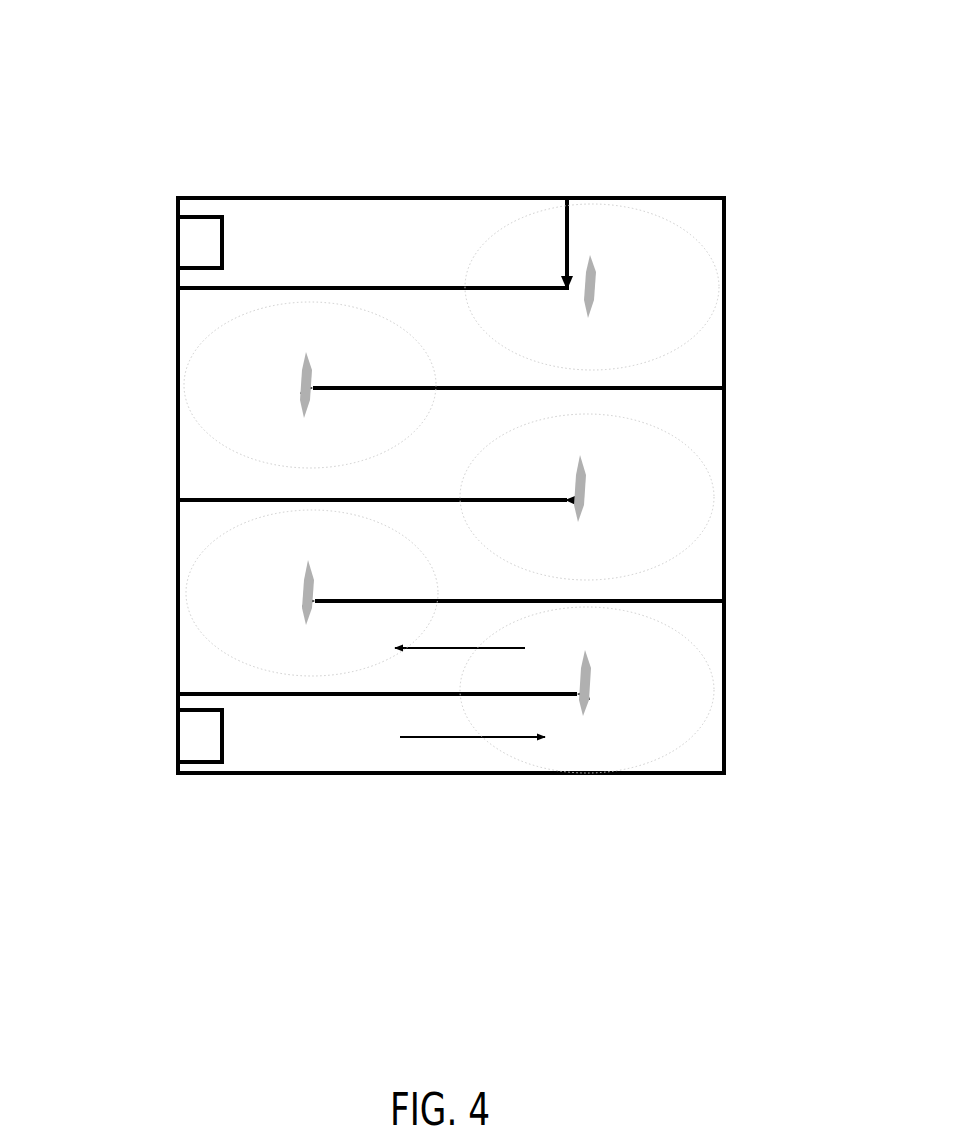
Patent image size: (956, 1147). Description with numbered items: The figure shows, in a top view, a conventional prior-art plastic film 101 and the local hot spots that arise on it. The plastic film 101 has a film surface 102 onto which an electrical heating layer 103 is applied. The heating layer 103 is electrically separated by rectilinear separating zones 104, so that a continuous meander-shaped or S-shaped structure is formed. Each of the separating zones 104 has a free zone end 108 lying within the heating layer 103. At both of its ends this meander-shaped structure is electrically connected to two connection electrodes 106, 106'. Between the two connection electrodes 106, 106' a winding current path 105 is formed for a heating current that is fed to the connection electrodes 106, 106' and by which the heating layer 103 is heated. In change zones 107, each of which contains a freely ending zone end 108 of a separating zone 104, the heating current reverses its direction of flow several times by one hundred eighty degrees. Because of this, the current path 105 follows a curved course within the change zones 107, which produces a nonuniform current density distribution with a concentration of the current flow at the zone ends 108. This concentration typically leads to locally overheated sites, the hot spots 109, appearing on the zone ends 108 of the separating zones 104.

The plastic film 101 is at (178, 118).
The film surface 102 is at (178, 236).
The electrical heating layer 103 is at (328, 261).
The separating zones 104 is at (378, 287).
The current path 105 is at (483, 737).
The connection electrode 106 is at (149, 247).
The connection electrode 106' is at (139, 736).
The change zones 107 is at (682, 280).
The zone end 108 is at (567, 283).
The hot spots 109 is at (590, 278).